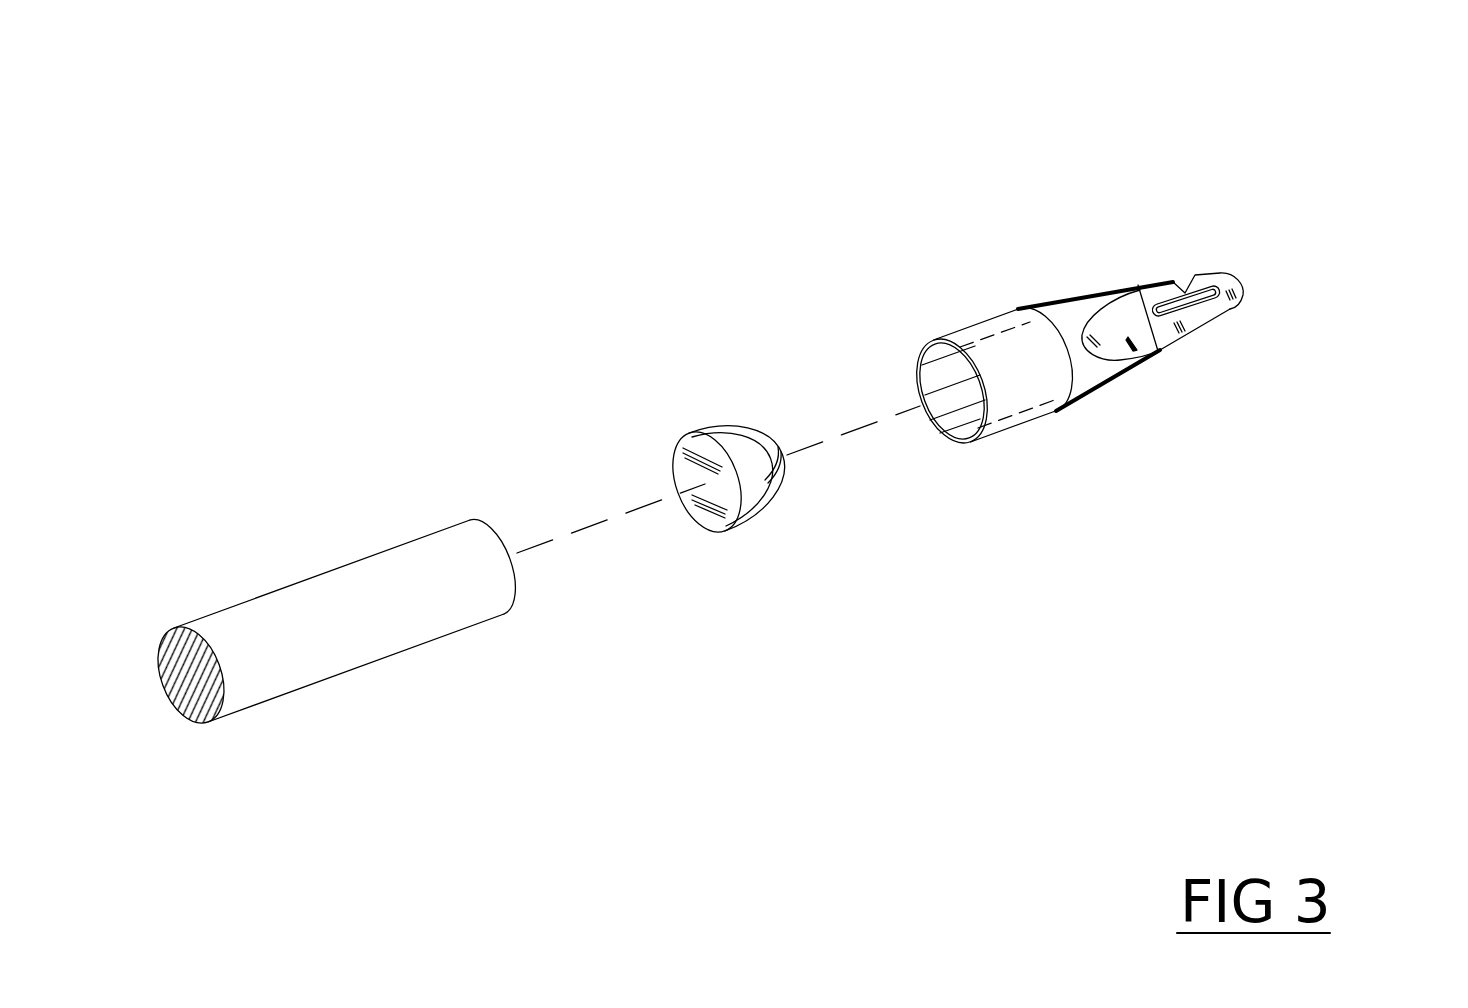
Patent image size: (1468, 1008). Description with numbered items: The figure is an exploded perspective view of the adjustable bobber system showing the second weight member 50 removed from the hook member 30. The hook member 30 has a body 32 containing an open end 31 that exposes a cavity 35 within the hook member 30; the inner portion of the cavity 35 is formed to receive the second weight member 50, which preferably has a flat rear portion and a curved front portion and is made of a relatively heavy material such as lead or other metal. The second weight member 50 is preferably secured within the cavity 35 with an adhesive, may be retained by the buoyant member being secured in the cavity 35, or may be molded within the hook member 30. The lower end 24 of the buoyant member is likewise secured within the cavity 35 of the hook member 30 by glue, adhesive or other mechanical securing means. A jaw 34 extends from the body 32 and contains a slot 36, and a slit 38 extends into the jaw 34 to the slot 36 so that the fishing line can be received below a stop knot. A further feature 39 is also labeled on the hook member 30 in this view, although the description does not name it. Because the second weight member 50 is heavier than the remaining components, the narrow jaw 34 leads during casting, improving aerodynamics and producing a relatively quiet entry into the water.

The tube 24 is at (277, 600).
The nozzle 30 is at (1107, 347).
The nozzle inlet opening 31 is at (945, 438).
The nozzle cylindrical body 32 is at (1008, 337).
The nozzle tip edge 34 is at (1217, 312).
The nozzle bore 35 is at (932, 372).
The nozzle tapered surface 36 is at (1183, 315).
The nozzle tip end 38 is at (1193, 277).
The discharge slot 39 is at (1193, 197).
The cap 50 is at (740, 430).